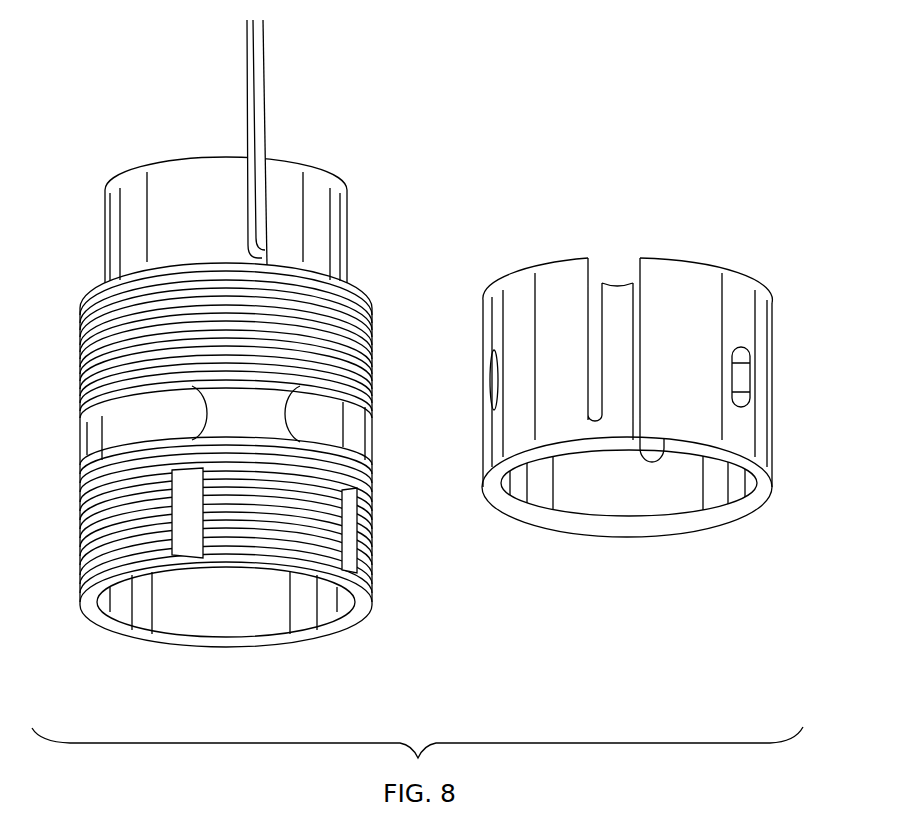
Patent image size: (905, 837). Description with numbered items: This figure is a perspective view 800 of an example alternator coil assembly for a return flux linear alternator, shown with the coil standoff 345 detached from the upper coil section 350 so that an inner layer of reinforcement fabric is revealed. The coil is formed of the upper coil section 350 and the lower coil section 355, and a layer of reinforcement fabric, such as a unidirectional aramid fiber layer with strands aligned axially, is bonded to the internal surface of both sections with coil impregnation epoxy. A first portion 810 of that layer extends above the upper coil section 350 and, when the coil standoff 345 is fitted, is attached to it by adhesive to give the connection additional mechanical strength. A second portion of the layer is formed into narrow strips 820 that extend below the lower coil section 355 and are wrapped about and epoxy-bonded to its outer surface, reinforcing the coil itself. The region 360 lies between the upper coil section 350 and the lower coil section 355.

The perspective view of alternator coil assembly 800 is at (536, 72).
The first portion of the layer of reinforcement fabric 810 is at (347, 206).
The upper coil section 350 is at (372, 338).
The groove 360 is at (360, 443).
The lower coil section 355 is at (365, 474).
The narrow strips 820 is at (347, 536).
The coil standoff 345 is at (773, 430).